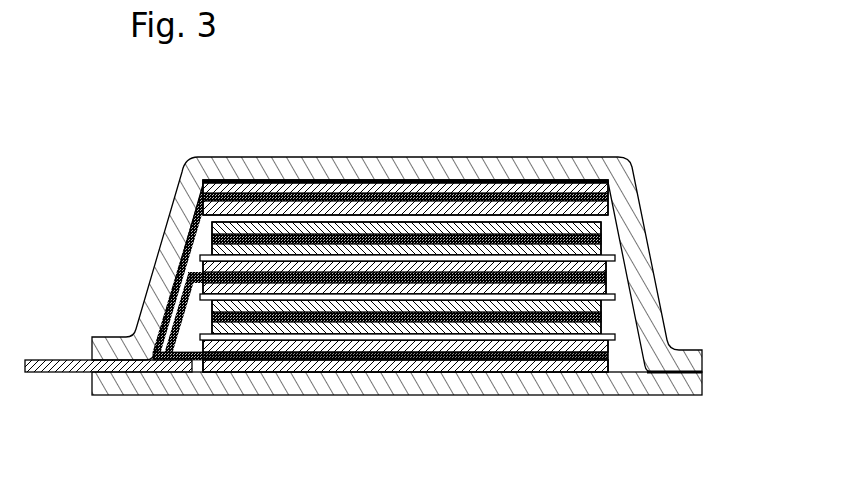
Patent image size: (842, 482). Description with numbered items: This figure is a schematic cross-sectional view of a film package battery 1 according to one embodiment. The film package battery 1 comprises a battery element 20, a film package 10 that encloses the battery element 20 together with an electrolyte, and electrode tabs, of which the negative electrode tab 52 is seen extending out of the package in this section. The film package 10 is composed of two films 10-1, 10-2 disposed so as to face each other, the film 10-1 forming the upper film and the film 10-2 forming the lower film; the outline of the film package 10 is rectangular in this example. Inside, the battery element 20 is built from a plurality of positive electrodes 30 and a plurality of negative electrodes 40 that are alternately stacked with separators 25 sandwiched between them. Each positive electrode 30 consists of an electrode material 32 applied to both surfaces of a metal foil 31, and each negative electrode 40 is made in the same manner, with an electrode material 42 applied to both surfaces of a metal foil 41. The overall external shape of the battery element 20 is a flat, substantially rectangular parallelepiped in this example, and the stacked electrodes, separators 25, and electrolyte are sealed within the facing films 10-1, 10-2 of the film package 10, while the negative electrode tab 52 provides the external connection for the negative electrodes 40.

The film package battery 1 is at (115, 125).
The film package 10 is at (444, 302).
The film 10-1 is at (688, 354).
The film 10-2 is at (421, 408).
The battery element 20 is at (283, 372).
The separator 25 is at (543, 337).
The positive electrode 30 is at (212, 239).
The metal foil 31 is at (393, 235).
The electrode material 32 is at (433, 250).
The negative electrode 40 is at (456, 285).
The metal foil 41 is at (482, 196).
The electrode material 42 is at (535, 212).
The negative electrode tab 52 is at (57, 360).